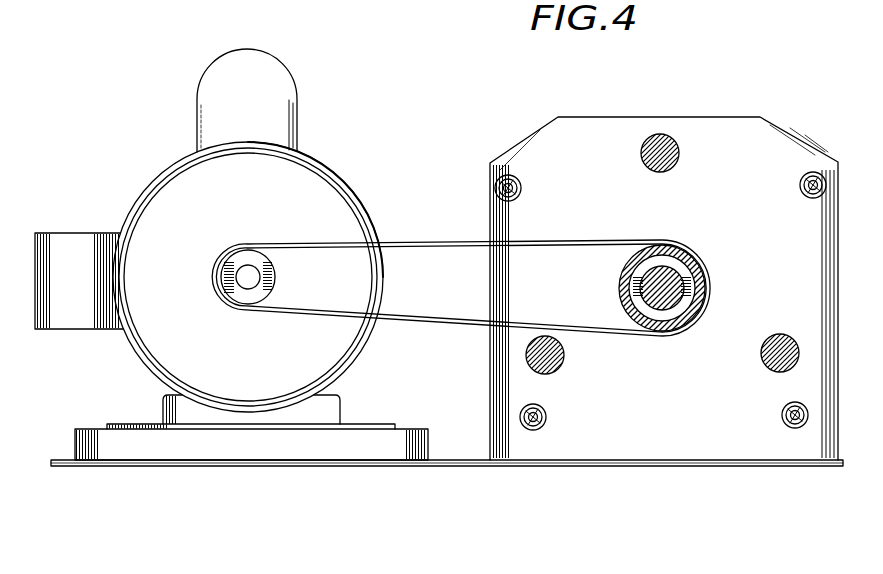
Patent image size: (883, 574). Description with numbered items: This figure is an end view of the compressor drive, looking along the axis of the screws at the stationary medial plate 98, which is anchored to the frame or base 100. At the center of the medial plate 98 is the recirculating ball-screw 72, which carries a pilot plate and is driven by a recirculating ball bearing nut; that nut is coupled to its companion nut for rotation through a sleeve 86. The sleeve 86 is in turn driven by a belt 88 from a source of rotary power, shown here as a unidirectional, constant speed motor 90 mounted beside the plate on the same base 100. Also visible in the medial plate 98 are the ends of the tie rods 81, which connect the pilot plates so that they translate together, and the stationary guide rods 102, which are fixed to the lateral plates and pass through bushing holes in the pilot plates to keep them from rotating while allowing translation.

The recirculating ball-screw 72 is at (680, 278).
The tie rods 81 is at (521, 187).
The sleeve 86 is at (667, 257).
The belt 88 is at (447, 245).
The motor 90 is at (320, 190).
The medial plate 98 is at (822, 313).
The frame or base 100 is at (690, 464).
The guide rods 102 is at (681, 153).